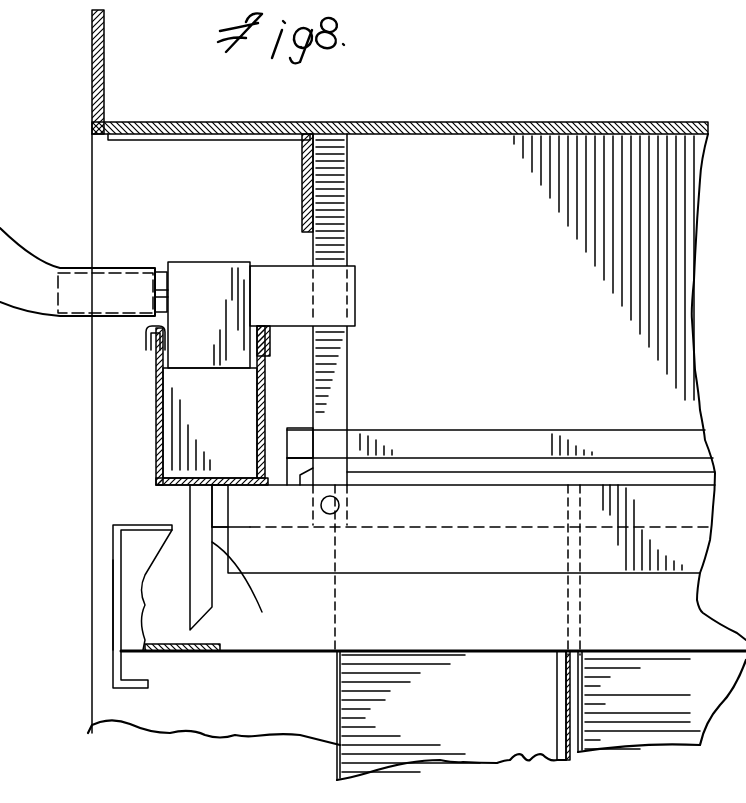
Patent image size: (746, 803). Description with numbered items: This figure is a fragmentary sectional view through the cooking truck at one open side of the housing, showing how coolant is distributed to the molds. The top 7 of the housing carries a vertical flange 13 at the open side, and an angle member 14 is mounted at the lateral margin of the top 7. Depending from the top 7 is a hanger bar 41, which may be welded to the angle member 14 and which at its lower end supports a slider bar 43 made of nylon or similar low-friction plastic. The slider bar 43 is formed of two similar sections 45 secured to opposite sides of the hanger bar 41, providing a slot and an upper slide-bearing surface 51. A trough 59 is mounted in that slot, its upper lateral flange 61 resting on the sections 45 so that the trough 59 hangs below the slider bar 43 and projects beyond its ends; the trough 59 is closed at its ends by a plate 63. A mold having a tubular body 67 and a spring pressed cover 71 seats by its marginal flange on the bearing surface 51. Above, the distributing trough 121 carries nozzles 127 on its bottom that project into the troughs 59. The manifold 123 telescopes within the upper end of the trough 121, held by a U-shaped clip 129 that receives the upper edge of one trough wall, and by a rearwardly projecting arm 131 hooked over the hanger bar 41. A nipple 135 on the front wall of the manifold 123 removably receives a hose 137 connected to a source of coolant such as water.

The top 7 is at (470, 122).
The vertical flange 13 is at (92, 48).
The angle member 14 is at (250, 138).
The hanger bar 41 is at (348, 208).
The slider bar 43 is at (268, 590).
The slider bar section 45 is at (386, 565).
The slide-bearing surface 51 is at (290, 470).
The trough 59 is at (224, 655).
The upper lateral flange 61 is at (144, 494).
The plate 63 is at (113, 612).
The tubular body 67 is at (338, 756).
The spring pressed cover 71 is at (508, 430).
The distributing trough 121 is at (156, 402).
The manifold 123 is at (212, 226).
The nozzle 127 is at (190, 548).
The U-shaped clip 129 is at (150, 334).
The arm 131 is at (356, 300).
The nipple 135 is at (165, 272).
The hose 137 is at (22, 255).